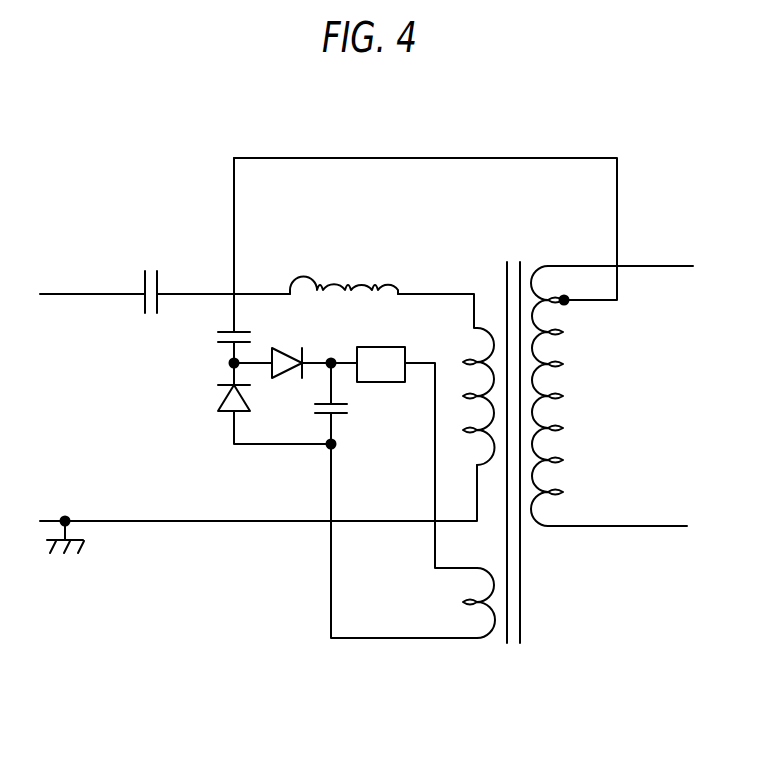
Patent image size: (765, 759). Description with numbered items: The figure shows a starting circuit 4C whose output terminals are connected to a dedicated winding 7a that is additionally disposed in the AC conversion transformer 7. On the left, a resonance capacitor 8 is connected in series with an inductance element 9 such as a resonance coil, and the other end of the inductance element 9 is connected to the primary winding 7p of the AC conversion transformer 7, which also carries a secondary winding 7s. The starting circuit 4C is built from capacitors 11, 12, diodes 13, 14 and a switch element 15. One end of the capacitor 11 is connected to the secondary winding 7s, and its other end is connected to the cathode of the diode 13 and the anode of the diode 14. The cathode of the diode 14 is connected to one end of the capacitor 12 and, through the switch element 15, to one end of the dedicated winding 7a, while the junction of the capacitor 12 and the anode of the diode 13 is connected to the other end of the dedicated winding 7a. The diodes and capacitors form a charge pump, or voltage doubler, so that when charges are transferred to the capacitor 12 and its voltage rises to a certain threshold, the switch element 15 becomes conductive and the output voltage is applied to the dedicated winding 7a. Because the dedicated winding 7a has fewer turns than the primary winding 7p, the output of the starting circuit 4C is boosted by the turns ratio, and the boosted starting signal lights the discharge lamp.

The AC conversion transformer 7 is at (547, 223).
The primary winding 7p is at (488, 326).
The secondary winding 7s is at (532, 278).
The dedicated winding 7a is at (475, 641).
The resonance capacitor 8 is at (158, 282).
The inductance element 9 is at (390, 277).
The capacitor 11 is at (227, 343).
The capacitor 12 is at (343, 414).
The diode 13 is at (228, 412).
The diode 14 is at (288, 353).
The switch element 15 is at (390, 347).
The starting circuit 4C is at (273, 450).